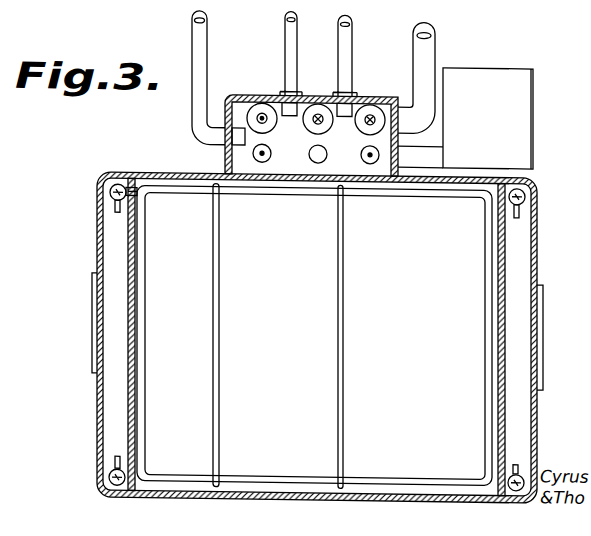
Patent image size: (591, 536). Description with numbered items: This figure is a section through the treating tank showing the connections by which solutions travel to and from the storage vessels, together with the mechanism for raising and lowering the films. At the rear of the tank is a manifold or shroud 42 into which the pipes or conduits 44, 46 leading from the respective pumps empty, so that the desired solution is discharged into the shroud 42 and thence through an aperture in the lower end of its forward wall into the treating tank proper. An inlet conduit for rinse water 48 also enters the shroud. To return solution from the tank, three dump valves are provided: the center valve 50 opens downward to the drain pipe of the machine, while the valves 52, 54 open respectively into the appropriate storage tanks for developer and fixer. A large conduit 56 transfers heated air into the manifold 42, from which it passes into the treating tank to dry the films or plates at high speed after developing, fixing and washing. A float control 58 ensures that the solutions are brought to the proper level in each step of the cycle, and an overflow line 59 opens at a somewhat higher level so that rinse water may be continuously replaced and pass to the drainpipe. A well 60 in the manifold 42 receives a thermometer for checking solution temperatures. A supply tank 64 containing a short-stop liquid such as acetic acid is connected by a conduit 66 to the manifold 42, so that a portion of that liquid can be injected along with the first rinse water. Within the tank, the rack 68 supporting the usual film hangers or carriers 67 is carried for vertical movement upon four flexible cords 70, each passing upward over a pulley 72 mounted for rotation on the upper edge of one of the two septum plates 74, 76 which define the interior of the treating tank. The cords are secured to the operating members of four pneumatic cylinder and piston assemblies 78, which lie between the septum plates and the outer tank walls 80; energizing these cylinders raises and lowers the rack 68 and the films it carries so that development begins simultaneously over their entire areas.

The manifold or shroud 42 is at (224, 153).
The pipe or conduit 44 is at (191, 32).
The pipe or conduit 46 is at (359, 45).
The inlet conduit for rinse water 48 is at (284, 29).
The center dump valve 50 is at (318, 108).
The dump valve 52 is at (253, 101).
The dump valve 54 is at (375, 101).
The large conduit 56 is at (436, 45).
The float control 58 is at (273, 142).
The overflow line 59 is at (324, 146).
The well 60 is at (371, 160).
The supply tank 64 is at (503, 105).
The conduit 66 is at (417, 144).
The film hangers or carriers 67 is at (218, 301).
The rack 68 is at (146, 364).
The flexible cords 70 is at (108, 189).
The pulley 72 is at (142, 202).
The septum plate 74 is at (128, 402).
The septum plate 76 is at (504, 409).
The pneumatic cylinder and piston assemblies 78 is at (527, 190).
The outer tank walls 80 is at (99, 255).